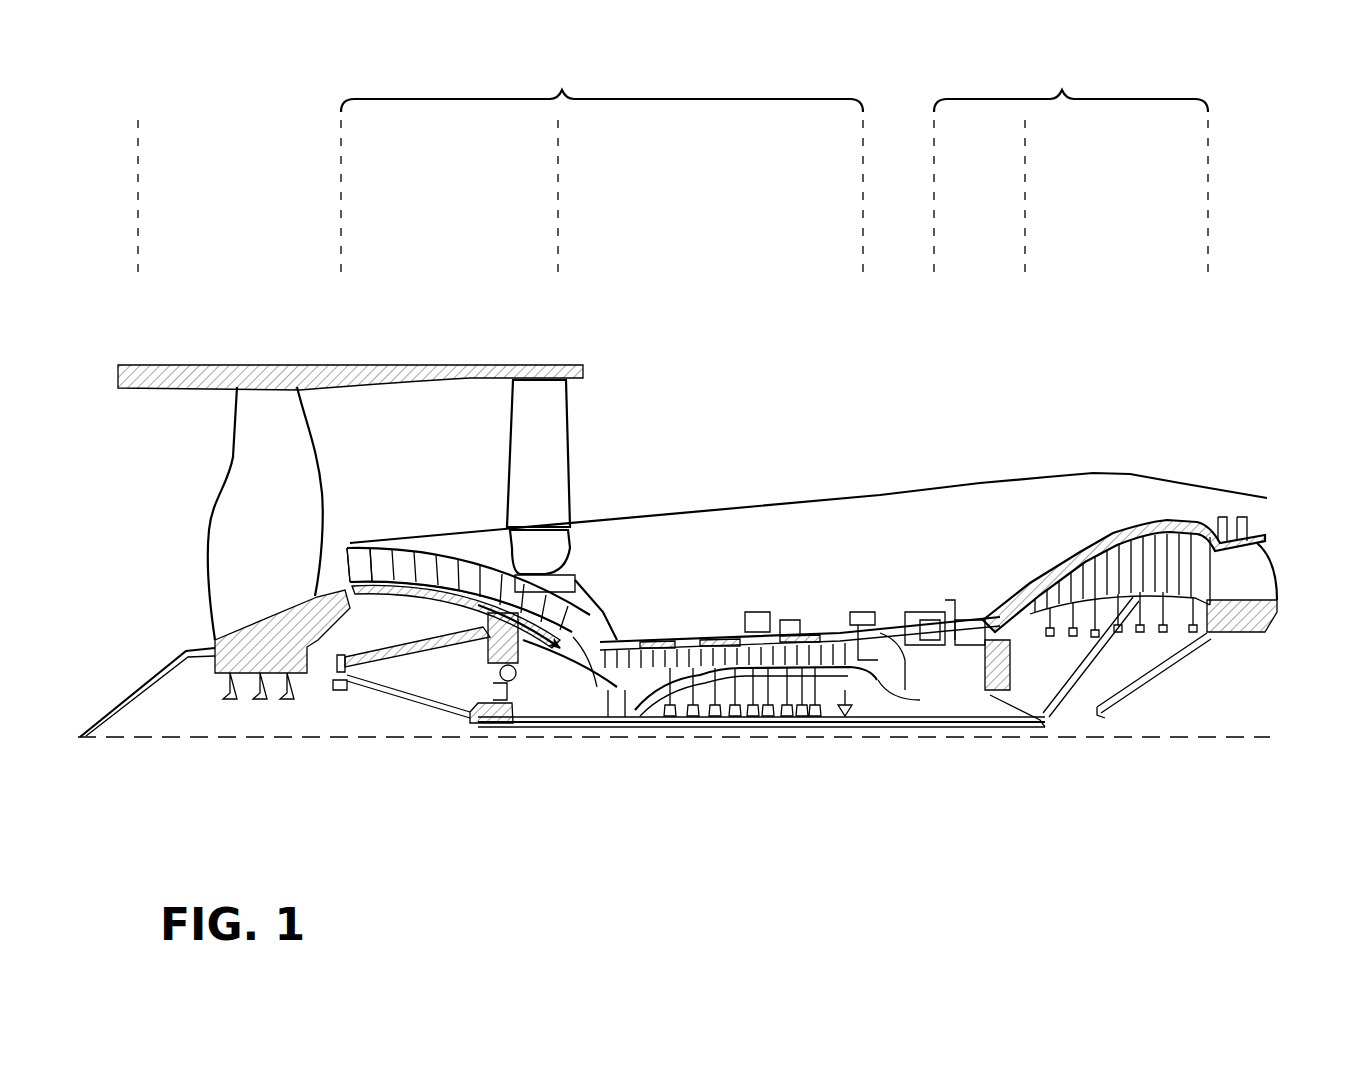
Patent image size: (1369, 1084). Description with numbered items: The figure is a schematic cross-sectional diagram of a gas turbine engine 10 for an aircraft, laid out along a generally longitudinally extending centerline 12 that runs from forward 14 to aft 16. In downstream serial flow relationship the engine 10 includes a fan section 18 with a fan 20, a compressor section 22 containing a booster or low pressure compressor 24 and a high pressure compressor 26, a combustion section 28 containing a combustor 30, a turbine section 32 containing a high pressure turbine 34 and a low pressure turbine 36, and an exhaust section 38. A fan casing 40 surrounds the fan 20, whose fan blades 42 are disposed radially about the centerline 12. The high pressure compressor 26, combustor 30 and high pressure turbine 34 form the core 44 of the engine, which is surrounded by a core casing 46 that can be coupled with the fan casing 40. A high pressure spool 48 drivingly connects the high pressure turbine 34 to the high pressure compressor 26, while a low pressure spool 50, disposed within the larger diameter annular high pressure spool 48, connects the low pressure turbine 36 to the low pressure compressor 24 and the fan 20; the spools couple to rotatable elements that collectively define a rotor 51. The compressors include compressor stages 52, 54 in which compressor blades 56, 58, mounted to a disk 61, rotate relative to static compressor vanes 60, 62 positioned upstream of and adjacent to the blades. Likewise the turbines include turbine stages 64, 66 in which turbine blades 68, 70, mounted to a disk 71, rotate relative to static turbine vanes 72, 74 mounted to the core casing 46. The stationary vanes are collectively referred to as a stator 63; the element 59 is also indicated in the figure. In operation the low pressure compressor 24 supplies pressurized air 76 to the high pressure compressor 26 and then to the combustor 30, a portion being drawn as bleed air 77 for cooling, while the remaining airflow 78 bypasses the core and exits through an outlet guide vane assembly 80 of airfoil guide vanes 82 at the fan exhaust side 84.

The gas turbine engine 10 is at (890, 356).
The centerline 12 is at (240, 741).
The forward 14 is at (88, 503).
The aft 16 is at (1298, 588).
The fan section 18 is at (138, 199).
The fan 20 is at (175, 578).
The compressor section 22 is at (602, 85).
The low pressure compressor 24 is at (558, 199).
The high pressure compressor 26 is at (558, 199).
The combustion section 28 is at (863, 199).
The combustor 30 is at (895, 630).
The turbine section 32 is at (1071, 85).
The high pressure turbine 34 is at (934, 199).
The low pressure turbine 36 is at (1025, 199).
The exhaust section 38 is at (1287, 540).
The fan casing 40 is at (258, 382).
The fan blades 42 is at (295, 445).
The core 44 is at (840, 538).
The core casing 46 is at (1160, 516).
The HP spool 48 is at (873, 705).
The LP spool 50 is at (493, 730).
The rotor 51 is at (440, 600).
The compressor stages 52 is at (406, 490).
The compressor stages 54 is at (670, 598).
The compressor blades 56 is at (372, 545).
The compressor blades 58 is at (628, 660).
The compressor hub 59 is at (372, 592).
The static compressor vanes 60 is at (358, 545).
The disk 61 is at (632, 710).
The static compressor vanes 62 is at (612, 640).
The stator 63 is at (613, 687).
The turbine stages 64 is at (930, 540).
The turbine stages 66 is at (1035, 490).
The turbine blades 68 is at (950, 625).
The turbine blades 70 is at (1052, 587).
The disk 71 is at (950, 700).
The static turbine vanes 72 is at (925, 625).
The static turbine vanes 74 is at (1045, 583).
The pressurized air 76 is at (575, 600).
The bleed air 77 is at (705, 640).
The airflow 78 is at (640, 438).
The outlet guide vane assembly 80 is at (583, 488).
The airfoil guide vanes 82 is at (520, 477).
The fan exhaust side 84 is at (613, 393).